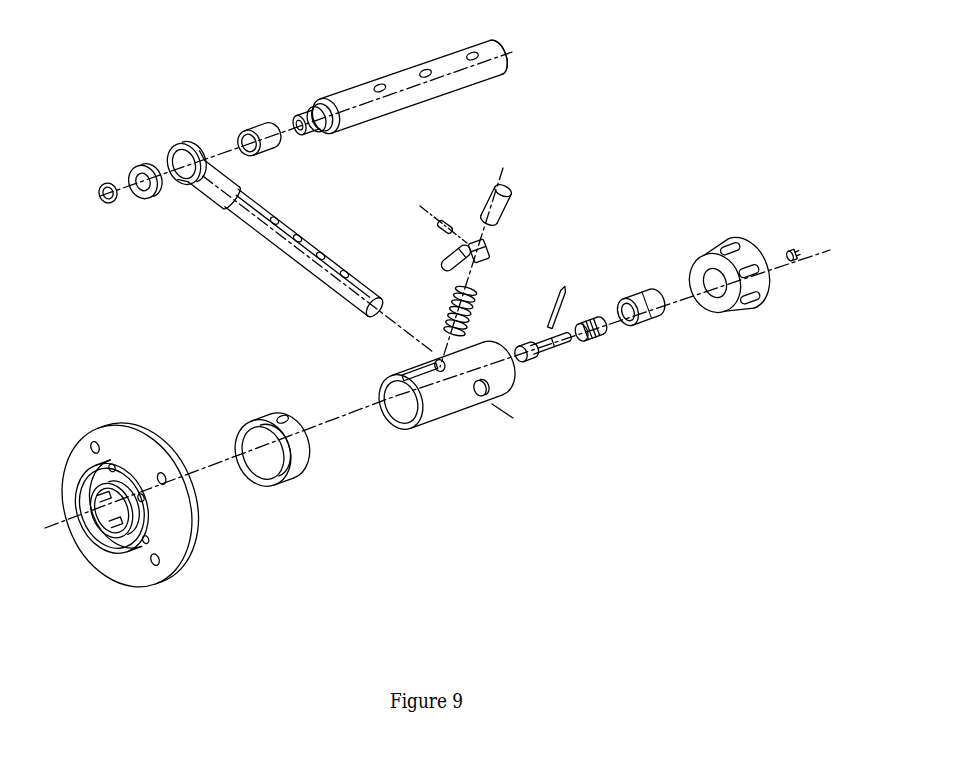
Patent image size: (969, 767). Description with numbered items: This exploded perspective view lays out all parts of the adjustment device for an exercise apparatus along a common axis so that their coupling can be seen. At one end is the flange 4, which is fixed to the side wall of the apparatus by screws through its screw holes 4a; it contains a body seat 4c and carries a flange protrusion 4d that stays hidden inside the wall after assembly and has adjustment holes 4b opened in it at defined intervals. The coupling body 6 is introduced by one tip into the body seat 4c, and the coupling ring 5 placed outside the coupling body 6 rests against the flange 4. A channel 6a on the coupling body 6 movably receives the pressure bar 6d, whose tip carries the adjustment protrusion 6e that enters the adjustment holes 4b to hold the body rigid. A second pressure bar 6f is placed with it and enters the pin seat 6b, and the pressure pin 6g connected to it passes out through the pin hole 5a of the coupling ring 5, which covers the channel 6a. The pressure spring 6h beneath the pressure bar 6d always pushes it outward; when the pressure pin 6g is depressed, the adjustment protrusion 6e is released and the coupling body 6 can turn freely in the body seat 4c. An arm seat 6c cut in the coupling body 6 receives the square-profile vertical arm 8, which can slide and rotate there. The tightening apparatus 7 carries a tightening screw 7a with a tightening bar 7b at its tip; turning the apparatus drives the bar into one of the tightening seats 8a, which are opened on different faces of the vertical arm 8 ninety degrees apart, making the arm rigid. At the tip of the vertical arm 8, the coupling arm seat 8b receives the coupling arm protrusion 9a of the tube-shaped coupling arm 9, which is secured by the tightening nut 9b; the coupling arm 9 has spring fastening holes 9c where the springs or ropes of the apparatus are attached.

The flange 4 is at (113, 426).
The screw holes 4a is at (160, 464).
The adjustment holes 4b is at (150, 527).
The body seat 4c is at (155, 560).
The flange protrusion 4d is at (105, 545).
The coupling ring 5 is at (297, 465).
The pin hole 5a is at (308, 442).
The coupling body 6 is at (497, 374).
The channel 6a is at (434, 372).
The pin seat 6b is at (446, 374).
The arm seat 6c is at (483, 397).
The pressure bar 6d is at (483, 257).
The adjustment protrusion 6e is at (448, 252).
The pressure bar 6f is at (488, 256).
The pressure pin 6g is at (503, 177).
The pressure spring 6h is at (476, 287).
The tightening apparatus 7 is at (723, 317).
The tightening screw 7a is at (652, 328).
The tightening bar 7b is at (570, 343).
The vertical arm 8 is at (260, 218).
The tightening seats 8a is at (310, 253).
The coupling arm seat 8b is at (167, 173).
The coupling arm 9 is at (403, 77).
The coupling arm protrusion 9a is at (292, 115).
The tightening nut 9b is at (130, 167).
The spring fastening holes 9c is at (508, 40).